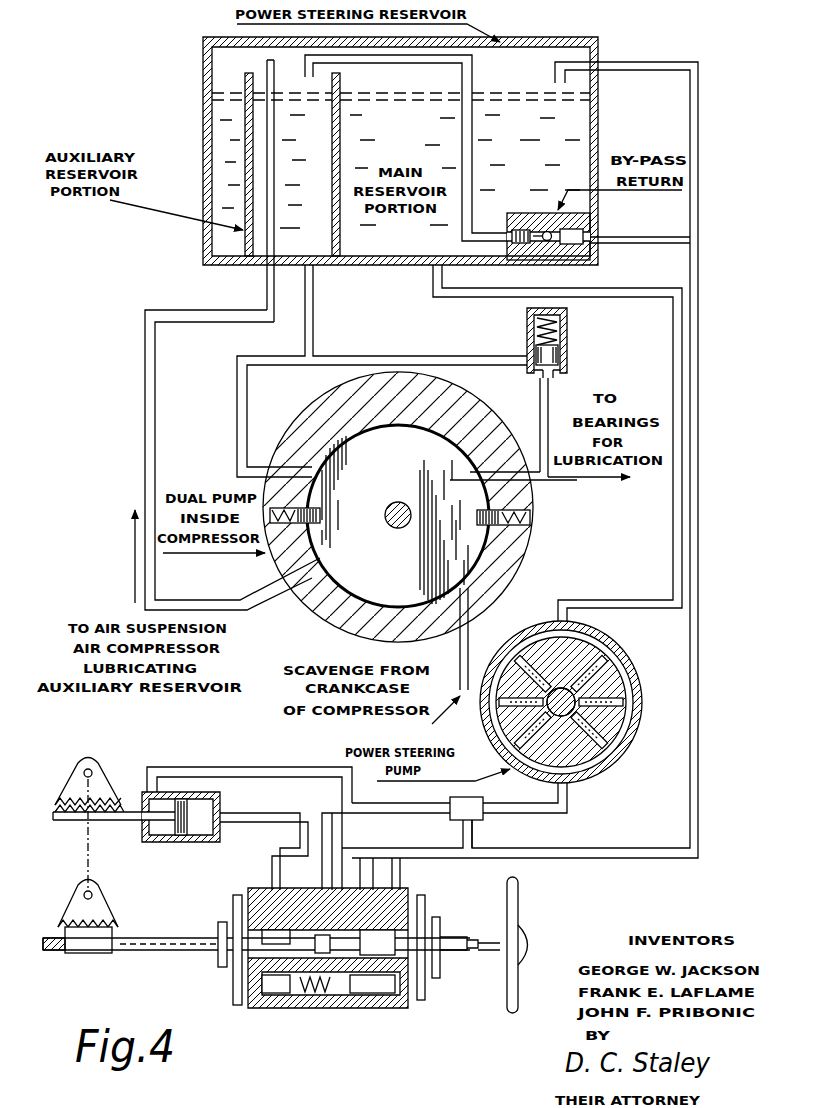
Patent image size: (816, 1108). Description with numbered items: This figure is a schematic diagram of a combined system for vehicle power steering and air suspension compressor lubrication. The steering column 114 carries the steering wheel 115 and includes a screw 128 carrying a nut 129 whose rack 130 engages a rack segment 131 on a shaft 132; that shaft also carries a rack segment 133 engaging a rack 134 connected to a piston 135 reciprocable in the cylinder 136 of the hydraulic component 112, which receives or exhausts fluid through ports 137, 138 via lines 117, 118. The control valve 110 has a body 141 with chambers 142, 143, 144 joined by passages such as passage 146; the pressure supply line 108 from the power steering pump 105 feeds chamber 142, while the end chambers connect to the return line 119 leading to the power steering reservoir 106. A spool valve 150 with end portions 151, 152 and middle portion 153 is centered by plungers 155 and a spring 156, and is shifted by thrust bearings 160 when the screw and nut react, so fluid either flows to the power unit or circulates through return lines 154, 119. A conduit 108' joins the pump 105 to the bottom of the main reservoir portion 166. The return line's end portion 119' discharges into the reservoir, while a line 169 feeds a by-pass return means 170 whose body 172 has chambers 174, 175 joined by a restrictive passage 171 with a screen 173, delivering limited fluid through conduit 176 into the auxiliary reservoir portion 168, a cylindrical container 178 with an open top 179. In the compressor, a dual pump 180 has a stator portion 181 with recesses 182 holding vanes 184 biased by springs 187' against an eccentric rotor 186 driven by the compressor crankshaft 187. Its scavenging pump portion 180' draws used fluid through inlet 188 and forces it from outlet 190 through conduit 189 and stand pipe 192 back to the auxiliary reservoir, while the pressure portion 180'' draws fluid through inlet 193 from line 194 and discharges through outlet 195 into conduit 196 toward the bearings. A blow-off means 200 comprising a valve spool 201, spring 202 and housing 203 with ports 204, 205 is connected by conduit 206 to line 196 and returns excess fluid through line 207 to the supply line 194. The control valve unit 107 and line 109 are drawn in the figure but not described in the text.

The power steering pump 105 is at (622, 655).
The power steering reservoir 106 is at (598, 107).
The control valve unit 107 is at (450, 800).
The pressure supply line 108 is at (386, 838).
The conduit 108' is at (557, 443).
The line 109 is at (476, 836).
The control valve 110 is at (377, 1020).
The hydraulic component 112 is at (142, 790).
The steering column 114 is at (468, 942).
The steering wheel 115 is at (518, 902).
The line 117 is at (226, 767).
The line 118 is at (300, 830).
The return line 119 is at (573, 681).
The end portion of return line 119' is at (525, 445).
The screw 128 is at (118, 951).
The nut 129 is at (112, 940).
The rack 130 is at (108, 928).
The rack segment 131 is at (78, 900).
The shaft 132 is at (92, 768).
The rack segment 133 is at (80, 776).
The rack 134 is at (113, 813).
The piston 135 is at (184, 834).
The cylinder 136 is at (220, 800).
The port 137 is at (151, 790).
The port 138 is at (222, 817).
The body 141 is at (412, 1008).
The chamber 142 is at (297, 998).
The chamber 143 is at (373, 993).
The chamber 144 is at (258, 930).
The passage 146 is at (342, 995).
The spool valve 150 is at (228, 948).
The end portion 151 is at (233, 900).
The end portion 152 is at (410, 898).
The middle portion 153 is at (322, 1000).
The return line 154 is at (390, 838).
The self-centering plungers 155 is at (248, 990).
The spring 156 is at (317, 993).
The thrust bearings 160 is at (220, 925).
The main reservoir portion 166 is at (387, 248).
The auxiliary reservoir portion 168 is at (260, 163).
The line 169 is at (653, 237).
The by-pass return means 170 is at (540, 252).
The restrictive passage 171 is at (548, 230).
The body 172 is at (512, 215).
The screen 173 is at (520, 243).
The chamber 174 is at (585, 242).
The chamber 175 is at (546, 231).
The conduit 176 is at (385, 63).
The cylindrical container 178 is at (255, 118).
The open top 179 is at (262, 75).
The dual pump 180 is at (397, 507).
The scavenging pump portion 180' is at (368, 618).
The lubricating pump pressure portion 180'' is at (438, 416).
The stator portion 181 is at (310, 407).
The recesses 182 is at (296, 518).
The vanes 184 is at (308, 511).
The eccentric pump rotor 186 is at (395, 438).
The compressor crankshaft 187 is at (394, 530).
The springs 187' is at (457, 507).
The inlet 188 is at (460, 627).
The conduit 189 is at (253, 600).
The scavenge pump outlet 190 is at (330, 567).
The stand pipe 192 is at (275, 203).
The inlet 193 is at (330, 477).
The line 194 is at (248, 357).
The outlet 195 is at (472, 478).
The conduit 196 is at (562, 482).
The blow-off means 200 is at (567, 312).
The valve spool 201 is at (558, 358).
The spring 202 is at (560, 333).
The housing 203 is at (527, 310).
The port 204 is at (550, 377).
The port 205 is at (528, 370).
The conduit 206 is at (540, 407).
The line 207 is at (382, 358).